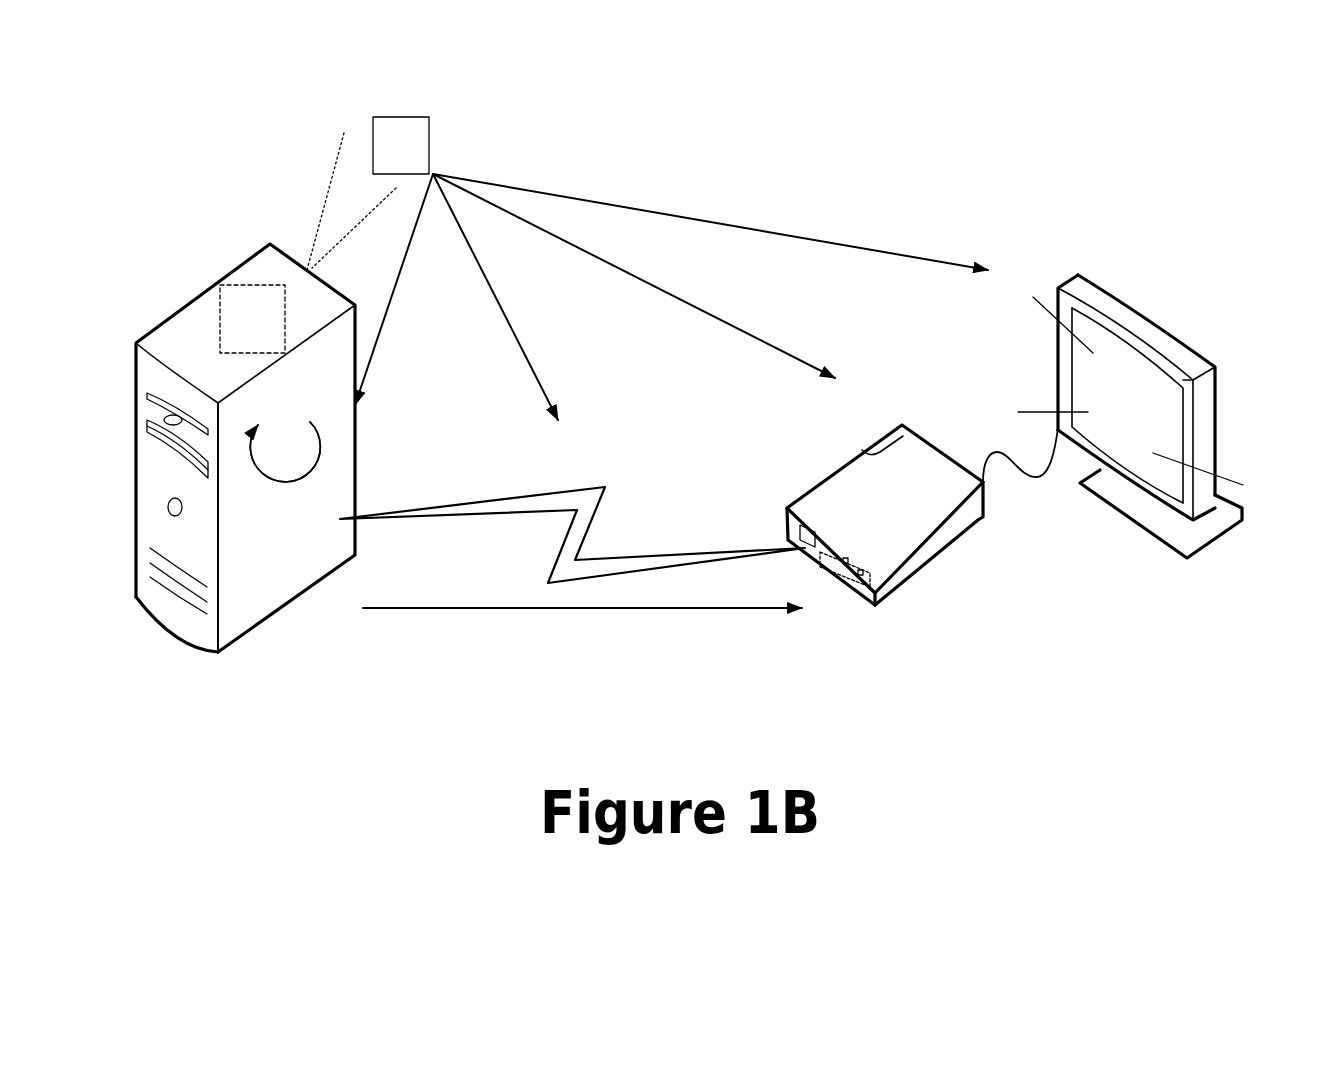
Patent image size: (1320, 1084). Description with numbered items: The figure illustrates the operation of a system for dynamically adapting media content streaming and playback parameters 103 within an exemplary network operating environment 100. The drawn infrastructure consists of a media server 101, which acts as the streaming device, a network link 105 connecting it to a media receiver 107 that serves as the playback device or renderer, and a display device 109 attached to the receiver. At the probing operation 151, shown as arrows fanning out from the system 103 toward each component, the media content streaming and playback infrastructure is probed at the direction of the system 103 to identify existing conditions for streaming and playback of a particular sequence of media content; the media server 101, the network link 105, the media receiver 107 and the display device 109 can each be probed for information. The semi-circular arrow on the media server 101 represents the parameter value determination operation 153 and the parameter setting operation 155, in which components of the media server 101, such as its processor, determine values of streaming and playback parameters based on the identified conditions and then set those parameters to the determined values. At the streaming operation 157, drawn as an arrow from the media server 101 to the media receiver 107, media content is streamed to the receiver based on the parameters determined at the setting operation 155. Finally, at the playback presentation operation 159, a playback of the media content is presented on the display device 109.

The network operating environment 100 is at (1000, 680).
The media server 101 is at (222, 283).
The system for dynamically adapting media content streaming and playback parameters 103 is at (324, 235).
The network link 105 is at (570, 483).
The media receiver 107 is at (868, 450).
The display device 109 is at (1133, 302).
The probing operation 151 is at (671, 296).
The parameter value determination operation 153 is at (285, 452).
The parameter setting operation 155 is at (285, 452).
The streaming operation 157 is at (582, 625).
The playback presentation operation 159 is at (1150, 387).